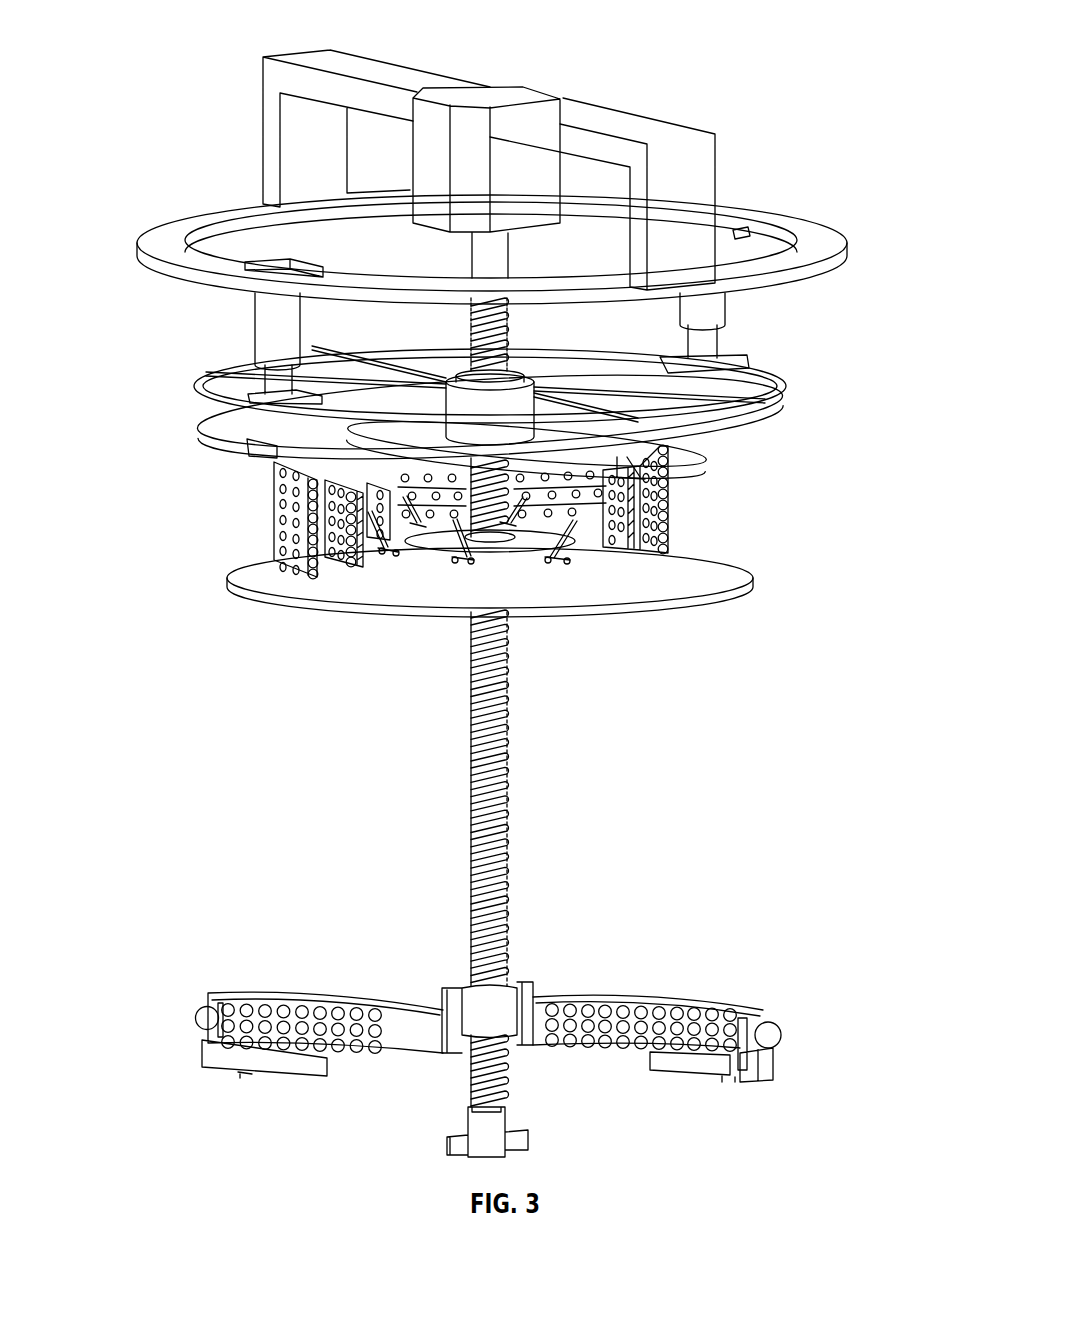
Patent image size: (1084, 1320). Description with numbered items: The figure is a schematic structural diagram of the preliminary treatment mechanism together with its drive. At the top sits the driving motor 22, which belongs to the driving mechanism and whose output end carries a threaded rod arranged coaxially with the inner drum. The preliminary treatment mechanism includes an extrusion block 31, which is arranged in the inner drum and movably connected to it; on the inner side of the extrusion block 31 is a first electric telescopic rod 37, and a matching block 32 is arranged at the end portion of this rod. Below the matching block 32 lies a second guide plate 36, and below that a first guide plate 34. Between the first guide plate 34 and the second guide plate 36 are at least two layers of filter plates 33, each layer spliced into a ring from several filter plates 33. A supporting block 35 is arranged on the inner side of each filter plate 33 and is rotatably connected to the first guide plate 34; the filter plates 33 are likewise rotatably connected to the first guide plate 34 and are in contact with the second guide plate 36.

The driving motor 22 is at (475, 172).
The extrusion block 31 is at (808, 265).
The matching block 32 is at (787, 397).
The filter plate 33 is at (667, 507).
The first guide plate 34 is at (750, 567).
The supporting block 35 is at (372, 545).
The second guide plate 36 is at (277, 455).
The first electric telescopic rod 37 is at (735, 233).